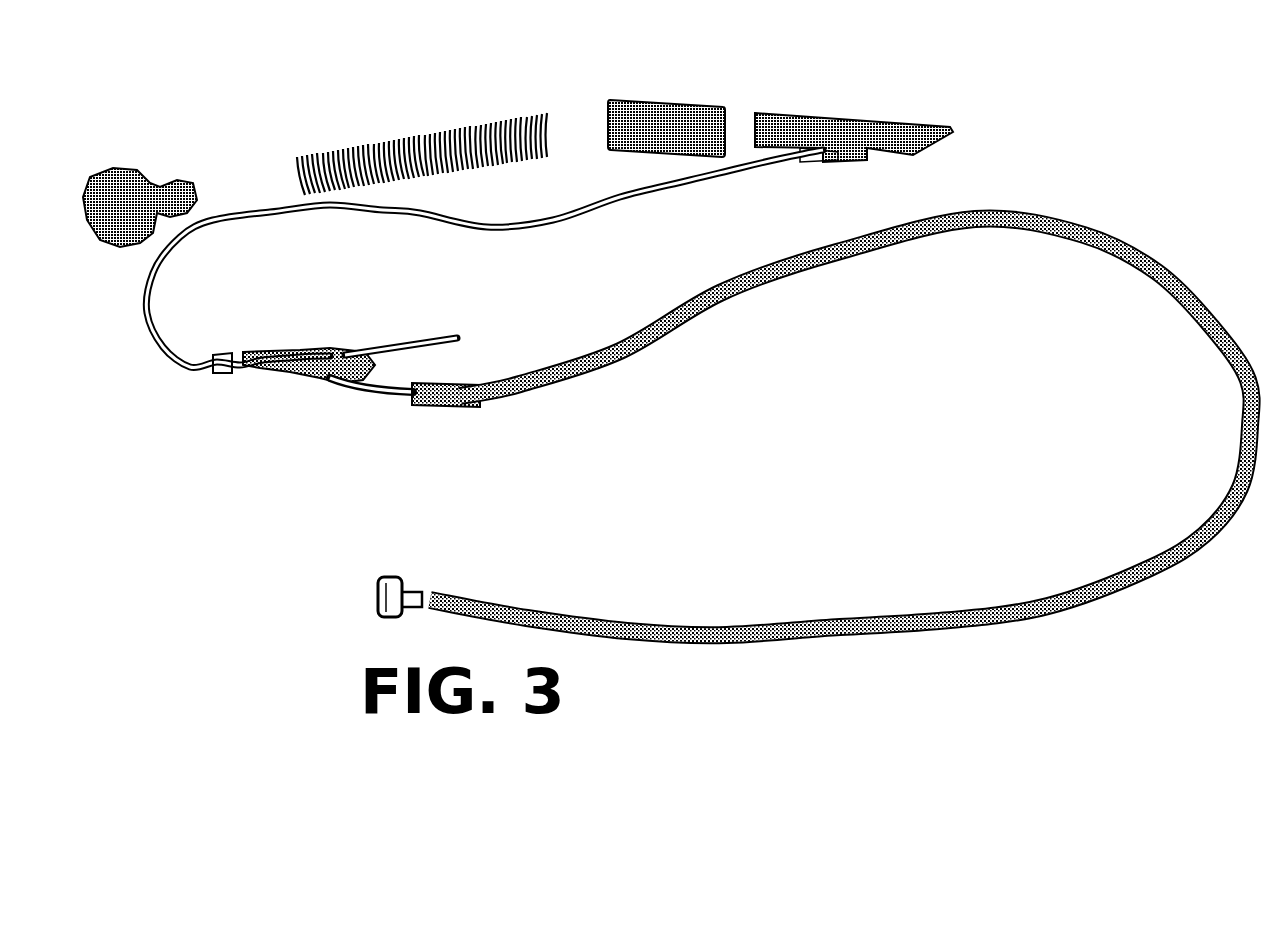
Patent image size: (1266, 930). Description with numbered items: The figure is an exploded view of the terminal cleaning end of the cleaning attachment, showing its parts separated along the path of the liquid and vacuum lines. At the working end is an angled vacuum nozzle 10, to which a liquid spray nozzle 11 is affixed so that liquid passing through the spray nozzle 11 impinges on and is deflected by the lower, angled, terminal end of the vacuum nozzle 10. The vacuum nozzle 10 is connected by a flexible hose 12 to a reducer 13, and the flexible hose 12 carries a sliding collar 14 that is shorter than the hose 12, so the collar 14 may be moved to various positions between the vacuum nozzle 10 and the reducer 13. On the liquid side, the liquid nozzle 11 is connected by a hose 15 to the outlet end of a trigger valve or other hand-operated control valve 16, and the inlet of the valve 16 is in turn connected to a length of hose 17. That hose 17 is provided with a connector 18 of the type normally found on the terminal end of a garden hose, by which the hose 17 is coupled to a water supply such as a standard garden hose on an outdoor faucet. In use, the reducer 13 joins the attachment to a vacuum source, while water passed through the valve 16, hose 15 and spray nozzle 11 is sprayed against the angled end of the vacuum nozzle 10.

The angled vacuum nozzle 10 is at (867, 113).
The liquid spray nozzle 11 is at (810, 163).
The flexible hose 12 is at (380, 140).
The reducer 13 is at (110, 173).
The sliding collar 14 is at (662, 107).
The hose 15 is at (567, 228).
The trigger valve 16 is at (323, 393).
The length of hose 17 is at (857, 248).
The connector 18 is at (407, 587).